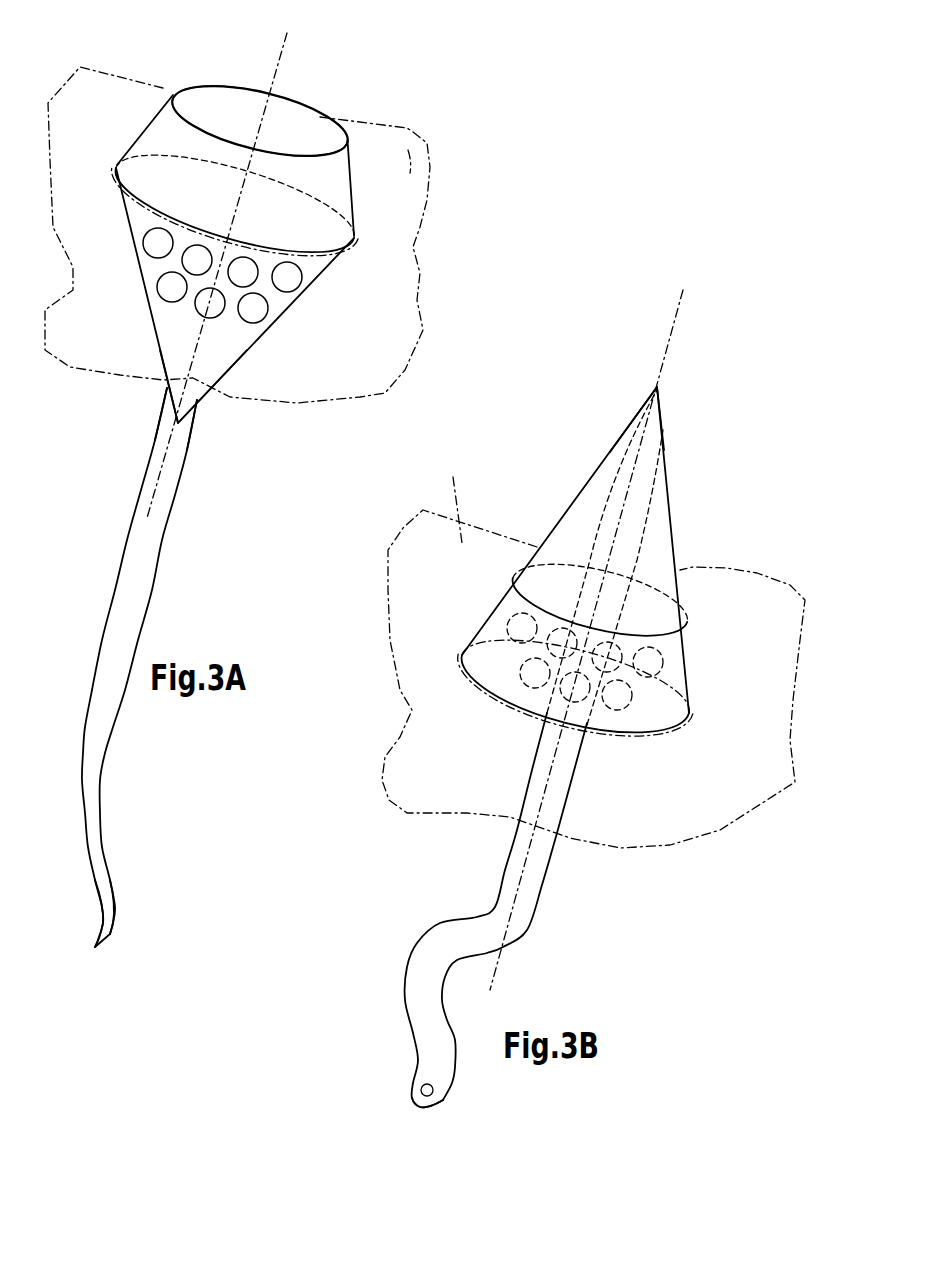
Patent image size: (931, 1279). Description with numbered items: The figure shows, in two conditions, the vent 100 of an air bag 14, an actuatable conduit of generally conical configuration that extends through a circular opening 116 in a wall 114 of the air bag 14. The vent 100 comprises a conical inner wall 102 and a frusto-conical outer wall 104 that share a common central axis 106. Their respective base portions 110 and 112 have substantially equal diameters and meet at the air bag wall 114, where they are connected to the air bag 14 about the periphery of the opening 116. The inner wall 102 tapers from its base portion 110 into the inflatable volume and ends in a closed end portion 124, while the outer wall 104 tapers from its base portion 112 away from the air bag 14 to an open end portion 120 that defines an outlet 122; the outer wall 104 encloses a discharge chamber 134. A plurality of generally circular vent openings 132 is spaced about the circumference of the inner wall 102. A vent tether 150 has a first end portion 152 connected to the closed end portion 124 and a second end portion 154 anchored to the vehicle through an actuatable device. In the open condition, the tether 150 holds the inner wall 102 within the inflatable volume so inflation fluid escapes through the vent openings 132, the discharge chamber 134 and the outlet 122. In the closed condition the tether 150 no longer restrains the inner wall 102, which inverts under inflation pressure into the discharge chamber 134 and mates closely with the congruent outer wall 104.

In FIG. 3A, the air bag 14 is at (68, 78).
In FIG. 3B, the air bag 14 is at (407, 525).
In FIG. 3A, the vent 100 is at (358, 101).
In FIG. 3B, the vent 100 is at (712, 426).
In FIG. 3A, the conical inner wall 102 is at (214, 314).
In FIG. 3B, the conical inner wall 102 is at (575, 597).
In FIG. 3A, the frusto-conical outer wall 104 is at (234, 137).
In FIG. 3B, the frusto-conical outer wall 104 is at (603, 641).
In FIG. 3A, the common central axis 106 is at (286, 55).
In FIG. 3B, the common central axis 106 is at (663, 352).
In FIG. 3A, the base portion of the inner wall 110 is at (140, 220).
In FIG. 3B, the base portion of the inner wall 110 is at (683, 683).
In FIG. 3A, the base portion of the outer wall 112 is at (147, 182).
In FIG. 3B, the base portion of the outer wall 112 is at (663, 710).
In FIG. 3A, the wall of the air bag 114 is at (413, 135).
In FIG. 3B, the wall of the air bag 114 is at (450, 499).
In FIG. 3A, the opening in the wall 116 is at (312, 253).
In FIG. 3B, the opening in the wall 116 is at (487, 693).
In FIG. 3A, the open end portion 120 is at (333, 178).
In FIG. 3B, the open end portion 120 is at (673, 537).
In FIG. 3A, the outlet 122 is at (236, 105).
In FIG. 3B, the outlet 122 is at (640, 613).
In FIG. 3A, the closed end portion 124 is at (193, 400).
In FIG. 3B, the closed end portion 124 is at (640, 425).
In FIG. 3A, the vent openings 132 is at (288, 278).
In FIG. 3B, the vent openings 132 is at (648, 667).
In FIG. 3A, the discharge chamber 134 is at (210, 150).
In FIG. 3B, the discharge chamber 134 is at (670, 673).
In FIG. 3A, the vent tether 150 is at (123, 670).
In FIG. 3B, the vent tether 150 is at (540, 748).
In FIG. 3A, the first end portion of the vent tether 152 is at (165, 412).
In FIG. 3B, the first end portion of the vent tether 152 is at (648, 466).
In FIG. 3A, the second end portion of the vent tether 154 is at (112, 926).
In FIG. 3B, the second end portion of the vent tether 154 is at (432, 1072).